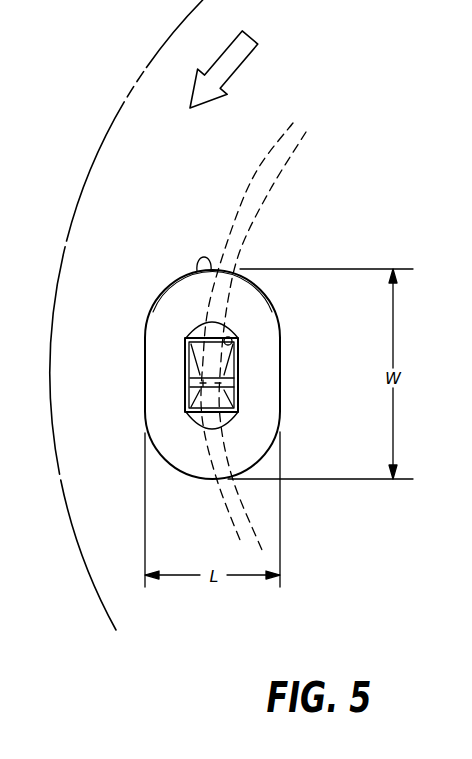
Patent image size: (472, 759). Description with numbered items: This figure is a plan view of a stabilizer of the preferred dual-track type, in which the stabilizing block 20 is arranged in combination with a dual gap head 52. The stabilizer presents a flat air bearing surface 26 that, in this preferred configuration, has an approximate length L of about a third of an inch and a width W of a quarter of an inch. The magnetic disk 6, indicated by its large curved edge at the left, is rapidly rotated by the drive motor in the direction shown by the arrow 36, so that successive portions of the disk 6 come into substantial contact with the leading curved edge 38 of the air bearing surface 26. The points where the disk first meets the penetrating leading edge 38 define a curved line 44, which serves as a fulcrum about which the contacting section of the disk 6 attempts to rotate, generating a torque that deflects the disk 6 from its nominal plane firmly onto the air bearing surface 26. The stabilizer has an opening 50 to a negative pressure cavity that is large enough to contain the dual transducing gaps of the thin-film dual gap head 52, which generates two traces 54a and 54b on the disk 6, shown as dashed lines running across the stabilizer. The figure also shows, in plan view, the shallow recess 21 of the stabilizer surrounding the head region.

The magnetic disk 6 is at (120, 108).
The stabilizing block 20 is at (144, 353).
The recess 21 is at (200, 325).
The air bearing surface 26 is at (267, 362).
The arrow 36 is at (240, 50).
The leading curved edge 38 is at (201, 272).
The curved line 44 is at (190, 270).
The opening 50 is at (236, 331).
The dual gap head 52 is at (191, 372).
The trace 54a is at (254, 171).
The trace 54b is at (266, 213).